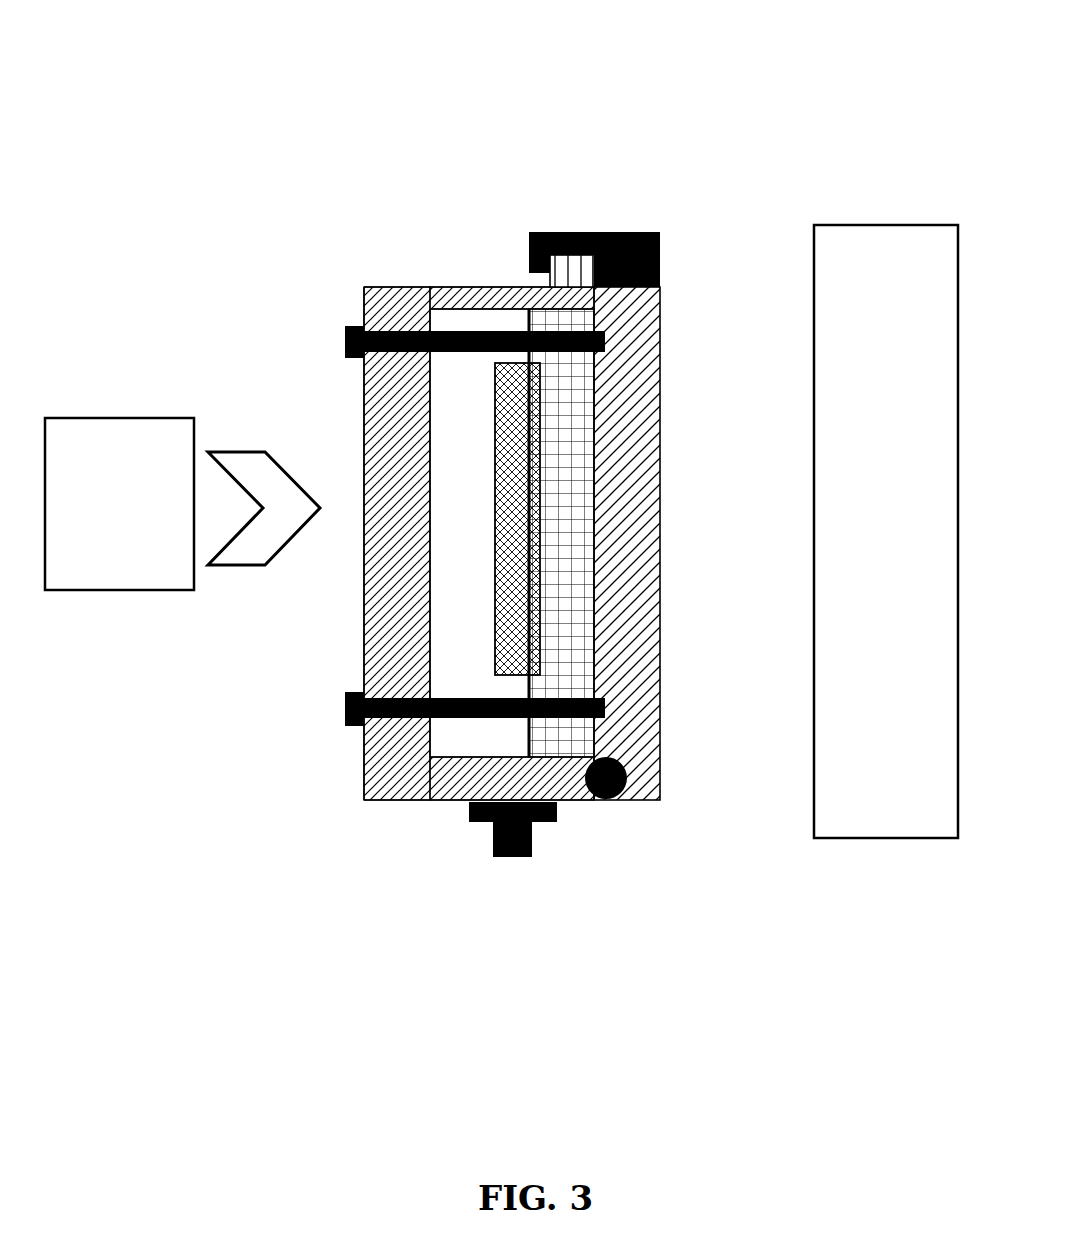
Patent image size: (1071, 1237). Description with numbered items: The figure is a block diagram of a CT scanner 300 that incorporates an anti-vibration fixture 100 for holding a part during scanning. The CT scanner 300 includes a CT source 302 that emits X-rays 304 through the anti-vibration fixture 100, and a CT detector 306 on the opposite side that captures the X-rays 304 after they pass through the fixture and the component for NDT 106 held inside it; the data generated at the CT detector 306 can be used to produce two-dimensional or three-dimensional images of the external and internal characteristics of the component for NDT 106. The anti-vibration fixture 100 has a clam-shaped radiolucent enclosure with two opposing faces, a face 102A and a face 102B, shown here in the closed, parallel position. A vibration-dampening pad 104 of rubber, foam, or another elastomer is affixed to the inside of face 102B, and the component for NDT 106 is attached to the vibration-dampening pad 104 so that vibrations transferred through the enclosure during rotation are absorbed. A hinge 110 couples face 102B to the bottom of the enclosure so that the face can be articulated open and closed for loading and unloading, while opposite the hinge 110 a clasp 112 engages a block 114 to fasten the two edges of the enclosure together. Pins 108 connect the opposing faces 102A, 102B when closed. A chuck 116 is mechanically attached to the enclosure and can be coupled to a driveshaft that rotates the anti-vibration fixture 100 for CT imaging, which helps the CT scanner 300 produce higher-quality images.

The CT scanner 300 is at (158, 102).
The anti-vibration fixture 100 is at (403, 213).
The face 102A is at (385, 310).
The face 102B is at (628, 350).
The vibration-dampening pad 104 is at (578, 385).
The component for NDT 106 is at (516, 460).
The pins 108 is at (345, 705).
The hinge 110 is at (627, 778).
The clasp 112 is at (660, 243).
The block 114 is at (562, 280).
The chuck 116 is at (538, 822).
The CT source 302 is at (119, 504).
The X-rays 304 is at (245, 465).
The CT detector 306 is at (886, 531).